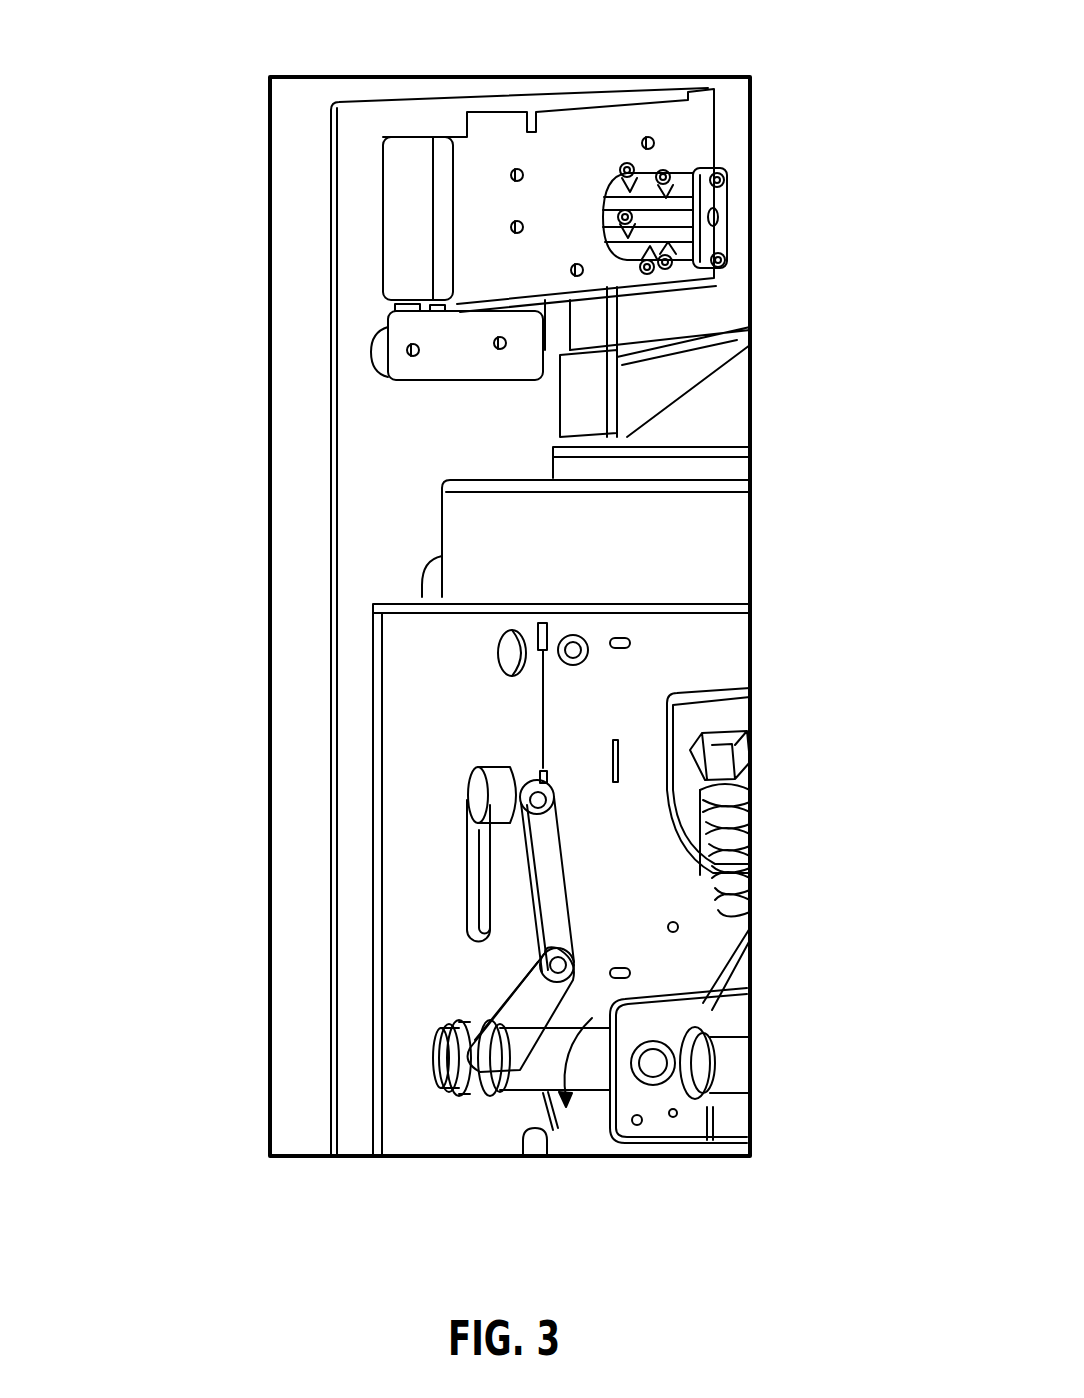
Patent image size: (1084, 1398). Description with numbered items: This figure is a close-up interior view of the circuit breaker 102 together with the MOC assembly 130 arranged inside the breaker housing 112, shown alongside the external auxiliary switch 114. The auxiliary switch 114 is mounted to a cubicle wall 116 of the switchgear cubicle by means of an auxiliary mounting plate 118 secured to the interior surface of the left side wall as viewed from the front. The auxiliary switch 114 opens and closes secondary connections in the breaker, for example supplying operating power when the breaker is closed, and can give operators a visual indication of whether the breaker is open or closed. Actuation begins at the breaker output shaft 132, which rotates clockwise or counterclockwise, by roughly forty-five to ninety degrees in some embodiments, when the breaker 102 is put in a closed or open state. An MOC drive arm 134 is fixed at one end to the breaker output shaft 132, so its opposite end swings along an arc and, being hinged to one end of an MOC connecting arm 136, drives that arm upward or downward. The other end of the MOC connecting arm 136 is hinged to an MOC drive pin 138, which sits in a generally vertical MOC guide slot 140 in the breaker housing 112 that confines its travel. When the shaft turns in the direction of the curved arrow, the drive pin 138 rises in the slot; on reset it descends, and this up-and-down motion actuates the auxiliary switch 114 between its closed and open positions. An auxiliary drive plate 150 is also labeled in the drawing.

The circuit breaker 102 is at (808, 272).
The breaker housing 112 is at (373, 672).
The auxiliary switch 114 is at (705, 168).
The cubicle wall 116 is at (331, 276).
The auxiliary mounting plate 118 is at (508, 145).
The MOC assembly 130 is at (450, 1117).
The breaker output shaft 132 is at (593, 1077).
The MOC drive arm 134 is at (545, 1002).
The MOC connecting arm 136 is at (545, 903).
The MOC drive pin 138 is at (483, 797).
The MOC guide slot 140 is at (462, 874).
The Auxiliary Drive Plate 150 is at (570, 332).